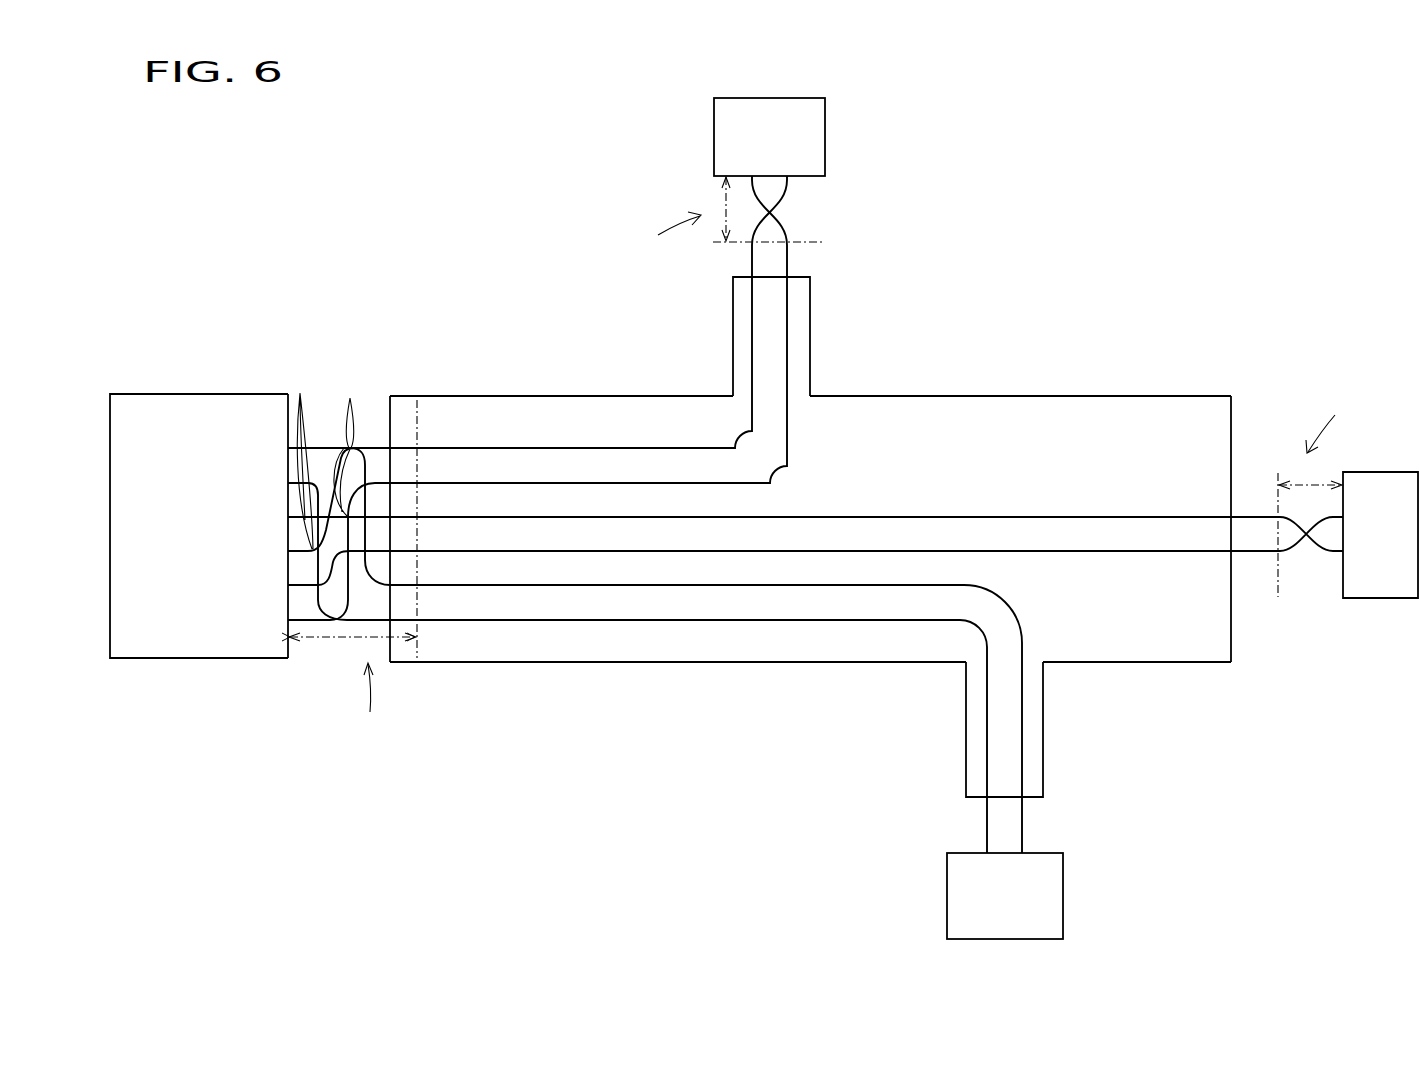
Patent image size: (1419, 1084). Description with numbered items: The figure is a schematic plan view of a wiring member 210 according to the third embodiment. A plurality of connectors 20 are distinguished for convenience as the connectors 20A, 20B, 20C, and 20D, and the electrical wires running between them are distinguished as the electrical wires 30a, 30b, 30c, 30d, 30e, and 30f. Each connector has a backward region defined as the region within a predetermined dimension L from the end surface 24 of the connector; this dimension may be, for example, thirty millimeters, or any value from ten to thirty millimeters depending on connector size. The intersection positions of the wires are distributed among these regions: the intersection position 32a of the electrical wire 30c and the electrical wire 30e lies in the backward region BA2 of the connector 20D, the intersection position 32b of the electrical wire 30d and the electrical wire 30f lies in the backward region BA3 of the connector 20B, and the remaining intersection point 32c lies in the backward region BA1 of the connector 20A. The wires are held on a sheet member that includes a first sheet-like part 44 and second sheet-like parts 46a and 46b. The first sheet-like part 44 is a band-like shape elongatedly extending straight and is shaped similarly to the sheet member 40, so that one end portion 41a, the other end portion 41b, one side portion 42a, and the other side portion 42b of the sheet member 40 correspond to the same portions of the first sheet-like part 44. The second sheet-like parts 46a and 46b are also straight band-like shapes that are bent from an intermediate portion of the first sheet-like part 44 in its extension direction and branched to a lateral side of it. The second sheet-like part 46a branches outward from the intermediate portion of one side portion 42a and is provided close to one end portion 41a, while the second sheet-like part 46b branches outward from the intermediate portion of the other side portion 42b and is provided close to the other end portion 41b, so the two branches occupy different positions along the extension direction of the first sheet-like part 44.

The wiring member 210 is at (315, 178).
The connector 20A is at (207, 520).
The connector 20B is at (829, 137).
The connector 20 is at (828, 137).
The connector 20C is at (1063, 905).
The connector 20D is at (1385, 598).
The end surface 24 is at (290, 656).
The electrical wire 30a is at (288, 447).
The electrical wire 30b is at (288, 482).
The electrical wire 30c is at (288, 516).
The electrical wire 30d is at (288, 550).
The electrical wire 30e is at (288, 584).
The electrical wire 30f is at (288, 618).
The intersection position 32a is at (1305, 540).
The intersection position 32b is at (775, 210).
The intersection point 32c is at (323, 453).
The sheet member 40 is at (812, 537).
The one end portion 41a is at (434, 405).
The other end portion 41b is at (1207, 405).
The one side portion 42a is at (940, 405).
The other side portion 42b is at (843, 662).
The first sheet-like part 44 is at (1113, 650).
The second sheet-like part 46a is at (810, 310).
The second sheet-like part 46b is at (1043, 760).
The predetermined dimension L is at (352, 652).
The backward region BA1 is at (371, 702).
The backward region BA2 is at (1315, 491).
The backward region BA3 is at (717, 213).